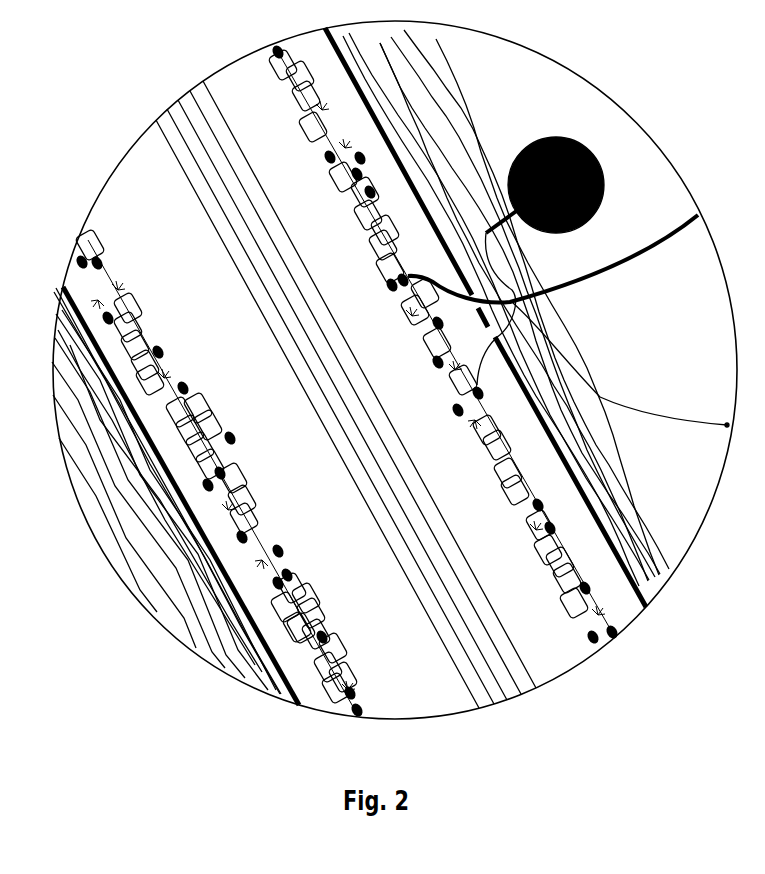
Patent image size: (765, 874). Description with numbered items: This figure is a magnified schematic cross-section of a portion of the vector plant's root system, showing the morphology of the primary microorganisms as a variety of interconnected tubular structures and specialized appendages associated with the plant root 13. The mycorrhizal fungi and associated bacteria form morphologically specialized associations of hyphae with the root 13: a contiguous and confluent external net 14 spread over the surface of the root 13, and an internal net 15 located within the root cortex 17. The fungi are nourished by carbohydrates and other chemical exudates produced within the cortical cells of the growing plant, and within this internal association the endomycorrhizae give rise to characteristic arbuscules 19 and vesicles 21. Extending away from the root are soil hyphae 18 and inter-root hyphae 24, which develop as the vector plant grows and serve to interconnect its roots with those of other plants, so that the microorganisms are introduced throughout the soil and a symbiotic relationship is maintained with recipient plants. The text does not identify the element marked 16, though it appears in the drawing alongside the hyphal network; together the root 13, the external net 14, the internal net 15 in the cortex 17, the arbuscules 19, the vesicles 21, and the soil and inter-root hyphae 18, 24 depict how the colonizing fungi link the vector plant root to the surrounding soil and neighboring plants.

The root 13 is at (653, 595).
The external net 14 is at (400, 72).
The internal net 15 is at (255, 45).
The cell body 16 is at (556, 137).
The root cortex 17 is at (420, 693).
The soil hyphae 18 is at (659, 415).
The arbuscules 19 is at (410, 311).
The vesicles 21 is at (328, 160).
The inter-root hyphae 24 is at (610, 273).